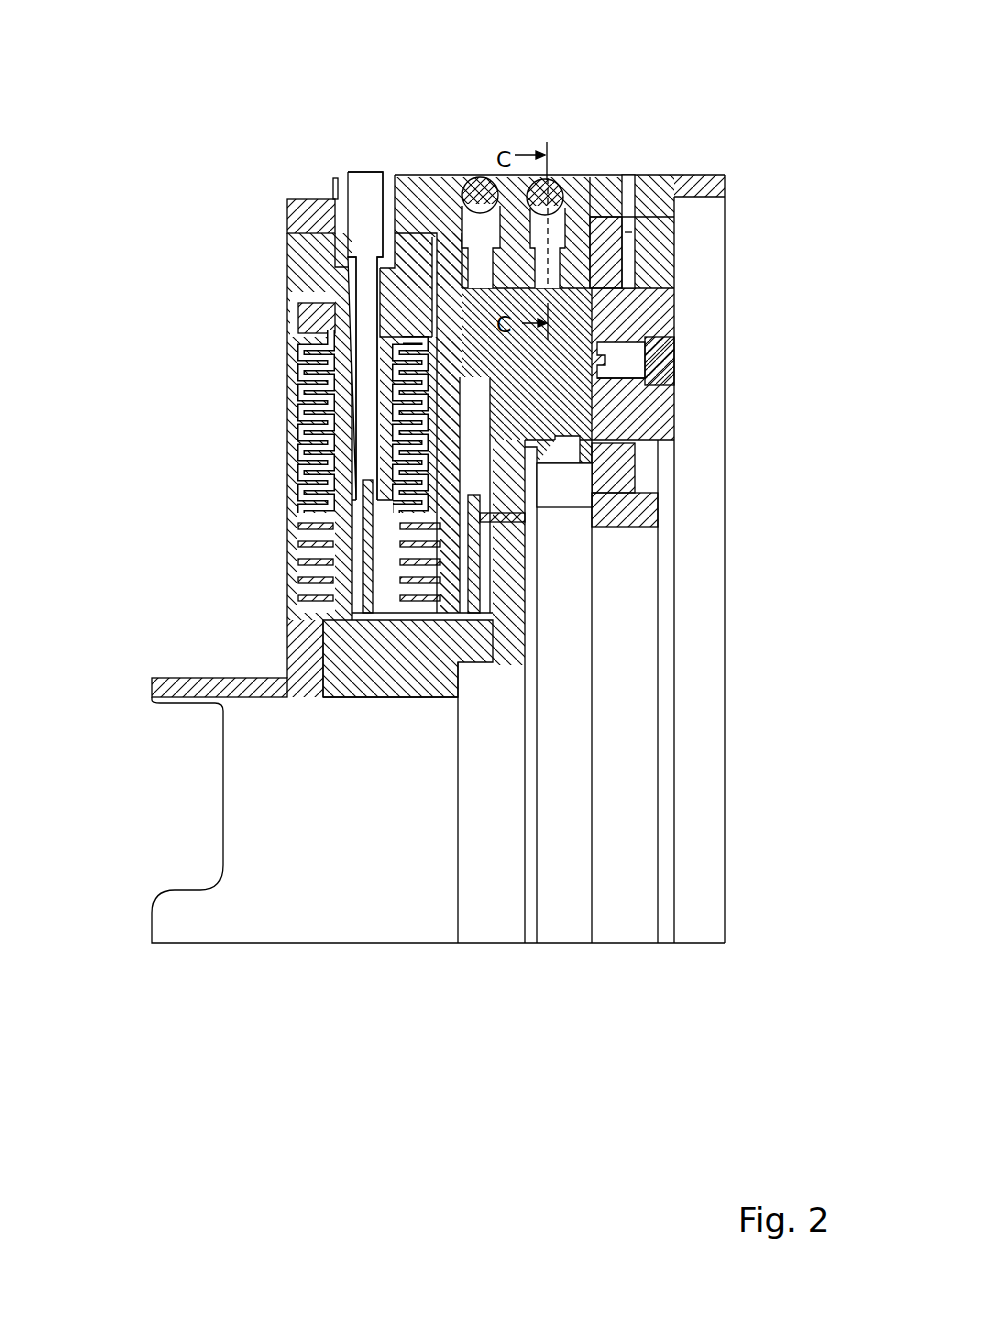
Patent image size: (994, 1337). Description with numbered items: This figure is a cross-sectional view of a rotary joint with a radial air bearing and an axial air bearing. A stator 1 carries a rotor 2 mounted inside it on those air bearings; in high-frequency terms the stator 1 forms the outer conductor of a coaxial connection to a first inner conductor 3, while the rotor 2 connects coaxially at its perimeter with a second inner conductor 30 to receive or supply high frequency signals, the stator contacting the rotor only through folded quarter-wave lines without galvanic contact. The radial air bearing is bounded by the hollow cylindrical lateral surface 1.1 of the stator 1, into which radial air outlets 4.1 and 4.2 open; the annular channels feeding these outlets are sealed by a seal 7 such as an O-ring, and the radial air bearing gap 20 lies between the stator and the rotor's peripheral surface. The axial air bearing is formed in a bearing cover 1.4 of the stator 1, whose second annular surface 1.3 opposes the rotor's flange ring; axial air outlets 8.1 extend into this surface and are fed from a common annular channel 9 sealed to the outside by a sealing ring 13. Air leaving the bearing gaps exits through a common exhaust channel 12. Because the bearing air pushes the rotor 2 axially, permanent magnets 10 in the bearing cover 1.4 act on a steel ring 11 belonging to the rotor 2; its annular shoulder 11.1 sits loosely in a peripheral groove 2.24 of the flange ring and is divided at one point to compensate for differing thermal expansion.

The stator 1 is at (262, 428).
The rotor 2 is at (383, 663).
The first inner conductor 3 is at (367, 218).
The radial air outlet 4.1 is at (487, 286).
The radial air outlet 4.2 is at (555, 287).
The seal 7 is at (528, 182).
The hollow cylindrical lateral surface 1.1 is at (583, 287).
The common exhaust channel 12 is at (628, 236).
The bearing cover 1.4 is at (674, 240).
The second annular surface 1.3 is at (598, 309).
The sealing ring 13 is at (658, 355).
The annular channel 9 is at (630, 362).
The axial air outlet 8.1 is at (615, 378).
The peripheral groove 2.24 is at (563, 552).
The permanent magnet 10 is at (617, 482).
The steel ring 11 is at (582, 495).
The annular shoulder 11.1 is at (598, 503).
The second inner conductor 30 is at (518, 516).
The radial air bearing gap 20 is at (185, 685).